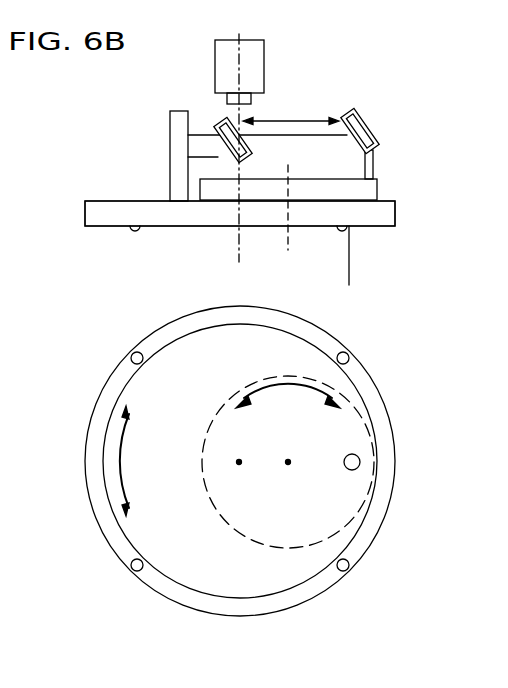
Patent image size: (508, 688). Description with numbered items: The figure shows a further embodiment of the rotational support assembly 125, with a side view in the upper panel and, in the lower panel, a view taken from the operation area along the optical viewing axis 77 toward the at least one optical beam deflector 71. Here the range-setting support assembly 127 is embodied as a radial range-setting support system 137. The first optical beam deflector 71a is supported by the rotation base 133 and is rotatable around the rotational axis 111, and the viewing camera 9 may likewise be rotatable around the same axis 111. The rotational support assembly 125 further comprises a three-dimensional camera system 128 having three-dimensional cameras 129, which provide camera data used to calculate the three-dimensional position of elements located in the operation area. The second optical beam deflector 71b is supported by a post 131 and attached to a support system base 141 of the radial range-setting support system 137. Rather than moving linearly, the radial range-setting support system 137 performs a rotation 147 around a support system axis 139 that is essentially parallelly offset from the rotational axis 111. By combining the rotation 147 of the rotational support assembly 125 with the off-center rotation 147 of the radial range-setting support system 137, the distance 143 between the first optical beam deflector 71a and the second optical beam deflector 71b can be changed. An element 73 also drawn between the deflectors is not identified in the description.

The viewing camera 9 is at (215, 55).
The optical beam deflector 71 is at (231, 126).
The first optical beam deflector 71a is at (233, 139).
The second optical beam deflector 71b is at (337, 125).
The laser beam 73 is at (268, 161).
The optical viewing axis 77 is at (352, 245).
The rotational axis 111 is at (236, 258).
The rotational support assembly 125 is at (146, 119).
The range-setting support assembly 127 is at (303, 631).
The 3D camera system 128 is at (116, 233).
The 3D cameras 129 is at (135, 233).
The post 131 is at (170, 178).
The rotation base 133 is at (390, 216).
The radial range-setting support system 137 is at (370, 190).
The support system axis 139 is at (288, 237).
The support system base 141 is at (333, 183).
The distance 143 is at (293, 118).
The rotation 147 is at (288, 391).